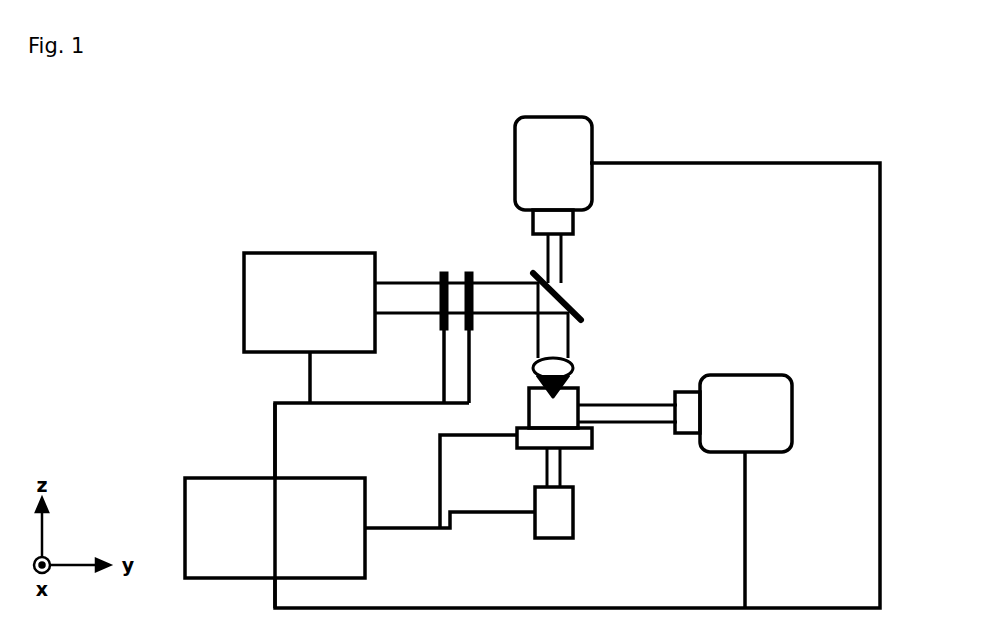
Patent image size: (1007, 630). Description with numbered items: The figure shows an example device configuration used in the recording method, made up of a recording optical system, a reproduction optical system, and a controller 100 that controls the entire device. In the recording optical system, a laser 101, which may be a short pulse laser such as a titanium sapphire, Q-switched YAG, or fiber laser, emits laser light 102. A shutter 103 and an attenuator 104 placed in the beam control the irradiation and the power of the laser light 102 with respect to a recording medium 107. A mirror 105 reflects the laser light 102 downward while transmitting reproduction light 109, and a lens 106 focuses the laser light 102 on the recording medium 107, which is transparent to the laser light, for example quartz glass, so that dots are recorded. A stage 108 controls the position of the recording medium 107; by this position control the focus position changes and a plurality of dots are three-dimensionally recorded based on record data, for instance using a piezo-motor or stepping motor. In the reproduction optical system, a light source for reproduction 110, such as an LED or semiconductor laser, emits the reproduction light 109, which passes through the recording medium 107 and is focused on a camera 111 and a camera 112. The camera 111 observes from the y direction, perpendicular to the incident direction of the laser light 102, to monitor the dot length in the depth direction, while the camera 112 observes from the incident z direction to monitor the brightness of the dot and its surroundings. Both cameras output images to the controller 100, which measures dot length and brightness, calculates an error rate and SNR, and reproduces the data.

The controller 100 is at (218, 478).
The laser 101 is at (292, 253).
The laser light 102 is at (418, 292).
The shutter 103 is at (444, 272).
The attenuator 104 is at (470, 272).
The mirror 105 is at (563, 303).
The lens 106 is at (562, 368).
The recording medium 107 is at (572, 395).
The stage 108 is at (535, 440).
The reproduction light 109 is at (555, 260).
The light source for reproduction 110 is at (555, 507).
The camera 111 is at (765, 433).
The camera 112 is at (587, 137).